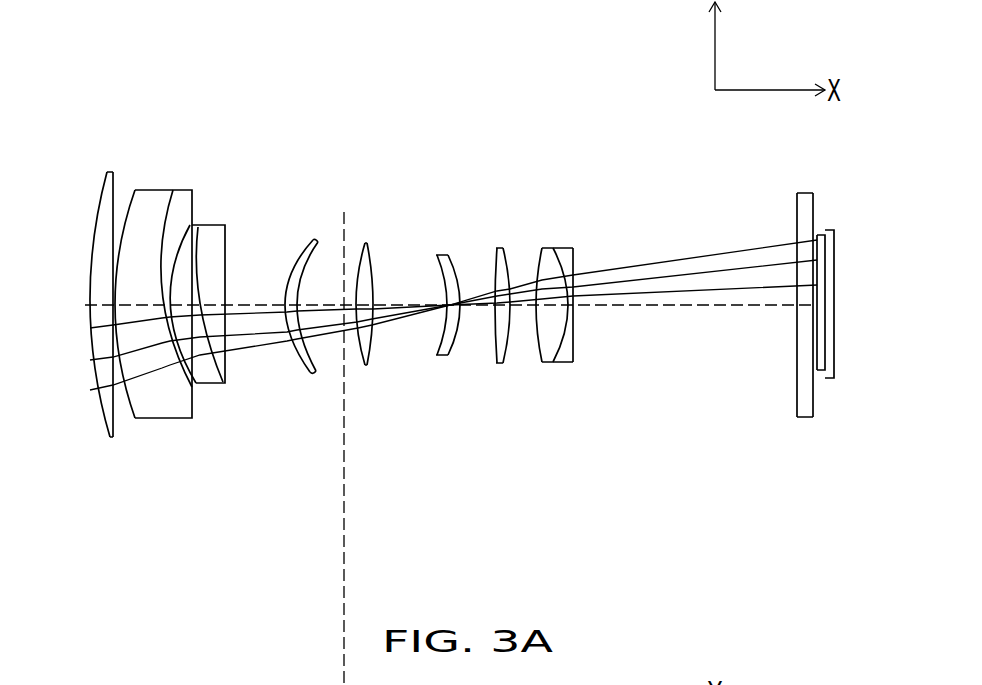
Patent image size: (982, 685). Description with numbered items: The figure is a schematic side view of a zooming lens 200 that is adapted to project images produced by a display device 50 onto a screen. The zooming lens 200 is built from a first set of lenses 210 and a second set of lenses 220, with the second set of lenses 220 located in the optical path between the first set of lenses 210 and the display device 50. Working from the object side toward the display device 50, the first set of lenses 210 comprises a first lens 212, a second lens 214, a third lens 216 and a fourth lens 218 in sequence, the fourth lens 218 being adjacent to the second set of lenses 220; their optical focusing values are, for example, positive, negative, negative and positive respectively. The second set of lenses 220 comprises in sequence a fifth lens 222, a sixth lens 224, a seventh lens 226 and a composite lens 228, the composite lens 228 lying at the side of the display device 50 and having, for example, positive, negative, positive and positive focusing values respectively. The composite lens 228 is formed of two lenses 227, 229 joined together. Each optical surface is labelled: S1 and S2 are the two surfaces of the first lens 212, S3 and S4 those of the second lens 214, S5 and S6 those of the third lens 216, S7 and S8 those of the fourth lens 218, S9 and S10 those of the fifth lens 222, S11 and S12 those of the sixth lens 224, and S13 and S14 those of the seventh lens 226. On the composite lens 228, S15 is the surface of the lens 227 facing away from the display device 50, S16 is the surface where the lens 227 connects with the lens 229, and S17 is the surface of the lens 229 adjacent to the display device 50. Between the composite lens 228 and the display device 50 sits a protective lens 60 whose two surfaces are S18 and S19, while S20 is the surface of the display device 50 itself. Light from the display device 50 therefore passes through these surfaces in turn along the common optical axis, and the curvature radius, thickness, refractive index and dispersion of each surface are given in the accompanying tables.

The zooming lens 200 is at (530, 502).
The first set of lenses 210 is at (328, 446).
The second set of lenses 220 is at (622, 446).
The first lens 212 is at (112, 172).
The second lens 214 is at (150, 200).
The third lens 216 is at (218, 226).
The fourth lens 218 is at (313, 240).
The fifth lens 222 is at (366, 243).
The sixth lens 224 is at (438, 254).
The seventh lens 226 is at (500, 247).
The composite lens 228 is at (680, 158).
The lens 227 is at (547, 249).
The lens 229 is at (565, 250).
The protective lens 60 is at (807, 390).
The display device 50 is at (818, 372).
The surface S1 is at (95, 240).
The surface S2 is at (112, 200).
The surface S3 is at (128, 207).
The surface S4 is at (172, 247).
The surface S5 is at (194, 255).
The surface S6 is at (206, 281).
The surface S7 is at (291, 351).
The surface S8 is at (314, 358).
The surface S9 is at (358, 350).
The surface S10 is at (374, 348).
The surface S11 is at (435, 272).
The surface S12 is at (458, 270).
The surface S13 is at (496, 338).
The surface S14 is at (509, 339).
The surface S15 is at (542, 259).
The surface S16 is at (564, 267).
The surface S17 is at (576, 331).
The surface S18 is at (796, 208).
The surface S19 is at (814, 208).
The surface S20 is at (819, 320).